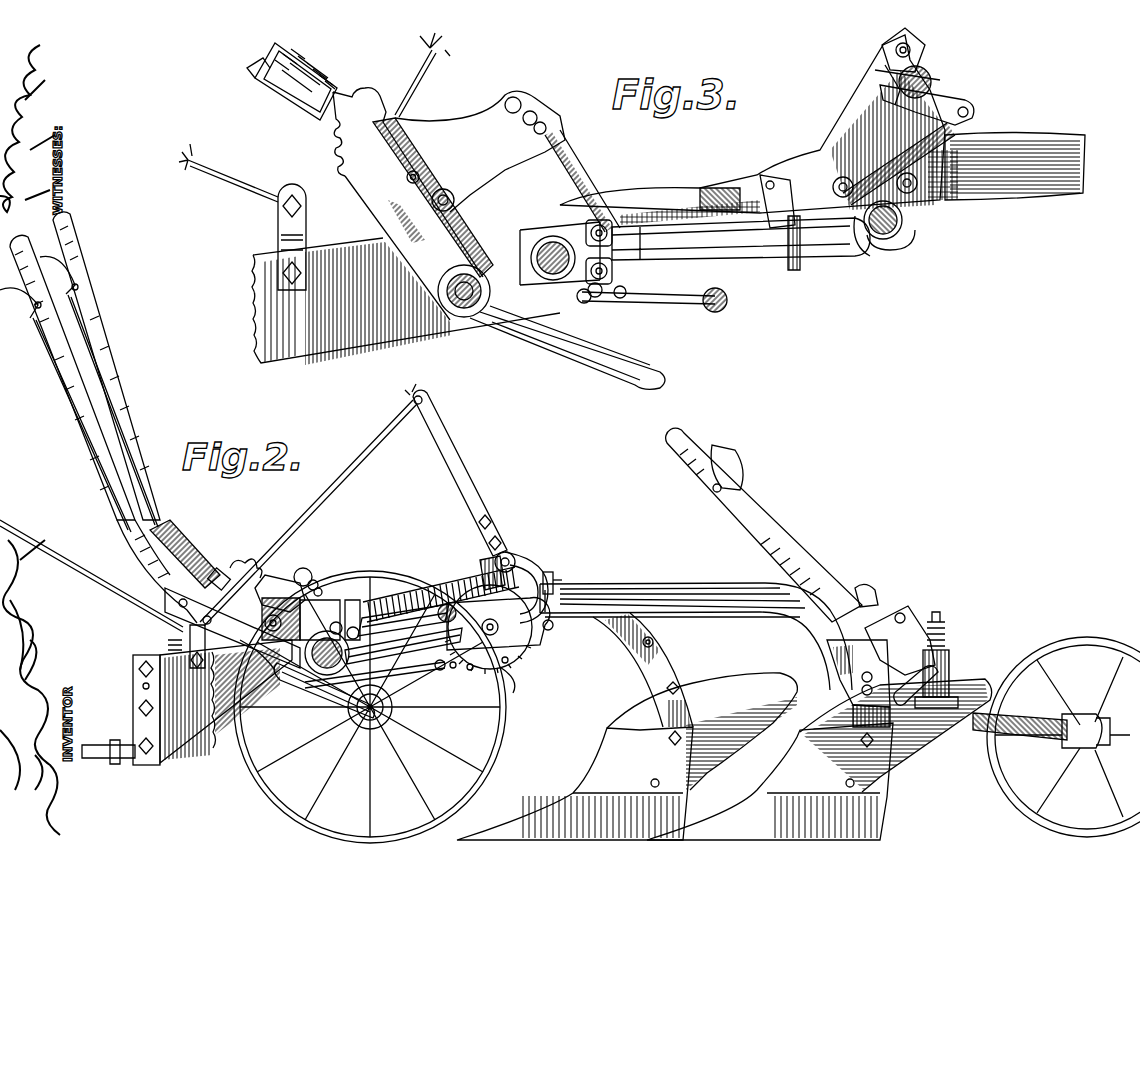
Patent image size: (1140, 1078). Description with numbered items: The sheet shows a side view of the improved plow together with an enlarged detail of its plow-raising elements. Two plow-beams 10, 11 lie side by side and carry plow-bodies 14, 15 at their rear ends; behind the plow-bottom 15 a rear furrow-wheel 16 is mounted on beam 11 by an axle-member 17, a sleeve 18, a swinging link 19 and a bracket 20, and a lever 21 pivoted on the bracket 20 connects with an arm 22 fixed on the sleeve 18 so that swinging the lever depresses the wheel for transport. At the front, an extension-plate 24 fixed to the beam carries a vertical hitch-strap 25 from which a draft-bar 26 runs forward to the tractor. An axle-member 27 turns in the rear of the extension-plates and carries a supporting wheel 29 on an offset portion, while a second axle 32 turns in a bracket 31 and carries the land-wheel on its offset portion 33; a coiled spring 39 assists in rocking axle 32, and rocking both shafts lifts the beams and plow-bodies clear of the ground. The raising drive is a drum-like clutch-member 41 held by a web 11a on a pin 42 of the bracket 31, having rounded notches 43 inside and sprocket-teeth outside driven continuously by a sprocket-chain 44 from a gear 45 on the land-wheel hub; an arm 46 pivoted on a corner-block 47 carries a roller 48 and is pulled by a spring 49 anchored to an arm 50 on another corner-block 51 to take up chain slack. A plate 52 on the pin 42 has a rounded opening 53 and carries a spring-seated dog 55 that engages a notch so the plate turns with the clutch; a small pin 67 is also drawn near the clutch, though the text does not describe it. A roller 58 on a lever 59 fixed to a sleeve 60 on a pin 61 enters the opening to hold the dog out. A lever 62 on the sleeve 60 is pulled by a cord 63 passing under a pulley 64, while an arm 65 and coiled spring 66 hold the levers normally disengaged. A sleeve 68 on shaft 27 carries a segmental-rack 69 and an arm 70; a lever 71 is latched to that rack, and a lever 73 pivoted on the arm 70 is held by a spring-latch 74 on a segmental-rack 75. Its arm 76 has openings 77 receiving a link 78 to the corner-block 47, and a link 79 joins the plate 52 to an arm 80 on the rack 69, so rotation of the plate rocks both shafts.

In FIG. 2, the plow-beam 10 is at (668, 678).
In FIG. 3, the plow-beam 11 is at (1037, 175).
In FIG. 2, the plow-beam 11 is at (695, 590).
In FIG. 2, the web 11a is at (545, 630).
In FIG. 2, the plow-body 14 is at (563, 812).
In FIG. 2, the plow-body 15 is at (745, 818).
In FIG. 2, the rear furrow-wheel 16 is at (1070, 644).
In FIG. 2, the axle-member 17 is at (1022, 738).
In FIG. 2, the sleeve 18 is at (938, 663).
In FIG. 2, the swinging link 19 is at (913, 690).
In FIG. 2, the bracket 20 is at (863, 663).
In FIG. 2, the lever 21 is at (770, 537).
In FIG. 2, the arm 22 is at (915, 635).
In FIG. 3, the extension-plate 24 is at (345, 340).
In FIG. 2, the extension-plate 24 is at (186, 710).
In FIG. 2, the vertical hitch-strap 25 is at (142, 686).
In FIG. 2, the draft-bar 26 is at (102, 752).
In FIG. 3, the axle-member 27 is at (468, 302).
In FIG. 2, the axle-member 27 is at (267, 683).
In FIG. 2, the supporting wheel 29 is at (262, 800).
In FIG. 3, the bracket 31 is at (850, 122).
In FIG. 2, the bracket 31 is at (478, 565).
In FIG. 3, the axle 32 is at (745, 243).
In FIG. 2, the axle 32 is at (417, 647).
In FIG. 3, the offset laterally-extending portion 33 is at (553, 236).
In FIG. 2, the offset laterally-extending portion 33 is at (323, 668).
In FIG. 2, the coiled spring 39 is at (445, 583).
In FIG. 2, the drum-like clutch-member 41 is at (515, 655).
In FIG. 3, the pin 42 is at (900, 232).
In FIG. 2, the pin 42 is at (535, 625).
In FIG. 2, the rounded notches 43 is at (507, 661).
In FIG. 2, the sprocket-chain 44 is at (455, 667).
In FIG. 2, the gear 45 is at (318, 600).
In FIG. 3, the arm 46 is at (669, 322).
In FIG. 2, the arm 46 is at (377, 667).
In FIG. 3, the corner-block 47 is at (606, 225).
In FIG. 2, the corner-block 47 is at (355, 628).
In FIG. 3, the roller 48 is at (718, 312).
In FIG. 3, the spring 49 is at (733, 207).
In FIG. 2, the spring 49 is at (420, 610).
In FIG. 3, the arm 50 is at (773, 203).
In FIG. 3, the corner-block 51 is at (833, 253).
In FIG. 2, the plate 52 is at (513, 693).
In FIG. 2, the rounded opening 53 is at (482, 622).
In FIG. 2, the spring-seated dog 55 is at (548, 600).
In FIG. 2, the roller 58 is at (550, 630).
In FIG. 2, the lever 59 is at (535, 570).
In FIG. 3, the sleeve 60 is at (920, 75).
In FIG. 3, the pin 61 is at (898, 70).
In FIG. 3, the lever 62 is at (915, 45).
In FIG. 2, the lever 62 is at (455, 462).
In FIG. 3, the cord or cable 63 is at (230, 178).
In FIG. 2, the cord or cable 63 is at (10, 535).
In FIG. 3, the pulley 64 is at (281, 205).
In FIG. 2, the pulley 64 is at (187, 627).
In FIG. 3, the arm 65 is at (950, 95).
In FIG. 3, the coiled spring 66 is at (967, 183).
In FIG. 2, the pin 67 is at (472, 669).
In FIG. 3, the sleeve 68 is at (460, 284).
In FIG. 2, the segmental-rack 69 is at (275, 614).
In FIG. 3, the arm 70 is at (407, 237).
In FIG. 2, the lever 71 is at (138, 545).
In FIG. 3, the lever 73 is at (300, 70).
In FIG. 2, the lever 73 is at (115, 390).
In FIG. 3, the spring-latch 74 is at (247, 66).
In FIG. 2, the spring-latch 74 is at (170, 532).
In FIG. 3, the segmental-rack 75 is at (378, 100).
In FIG. 2, the segmental-rack 75 is at (242, 565).
In FIG. 3, the arm 76 is at (455, 150).
In FIG. 2, the arm 76 is at (278, 585).
In FIG. 3, the openings 77 is at (517, 100).
In FIG. 2, the openings 77 is at (306, 570).
In FIG. 3, the link 78 is at (565, 155).
In FIG. 2, the link 78 is at (336, 622).
In FIG. 2, the link 79 is at (352, 600).
In FIG. 2, the arm 80 is at (220, 572).